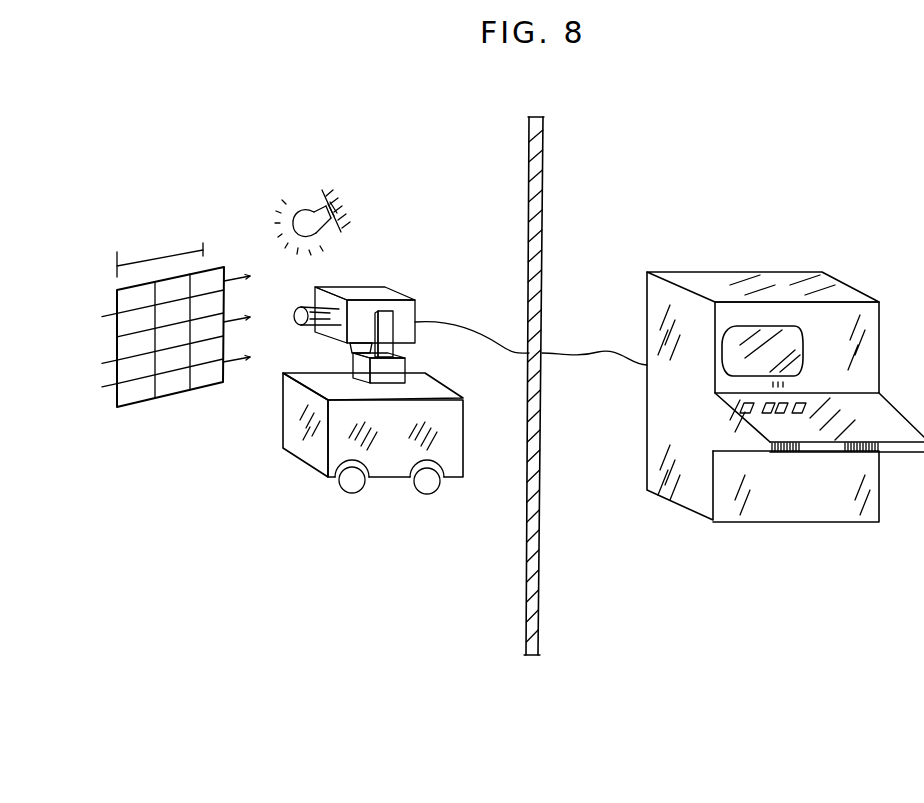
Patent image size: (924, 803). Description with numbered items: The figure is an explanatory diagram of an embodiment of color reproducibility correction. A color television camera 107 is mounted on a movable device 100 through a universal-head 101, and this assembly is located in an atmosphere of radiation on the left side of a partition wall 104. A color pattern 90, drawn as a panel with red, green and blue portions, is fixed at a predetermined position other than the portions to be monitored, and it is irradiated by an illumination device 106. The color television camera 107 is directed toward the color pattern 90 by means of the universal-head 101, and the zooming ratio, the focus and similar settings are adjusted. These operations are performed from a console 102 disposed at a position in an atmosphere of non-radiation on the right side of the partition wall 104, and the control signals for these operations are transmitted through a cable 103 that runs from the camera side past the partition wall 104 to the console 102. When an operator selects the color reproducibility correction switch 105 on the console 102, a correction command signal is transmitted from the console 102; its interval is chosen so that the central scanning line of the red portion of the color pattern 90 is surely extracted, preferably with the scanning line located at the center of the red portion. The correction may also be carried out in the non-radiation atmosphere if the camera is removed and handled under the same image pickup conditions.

The color pattern 90 is at (117, 338).
The movable device 100 is at (392, 467).
The universal-head 101 is at (405, 368).
The console 102 is at (780, 278).
The cable 103 is at (598, 352).
The partition wall 104 is at (543, 138).
The color reproducibility correction switch 105 is at (797, 413).
The illumination device 106 is at (317, 230).
The color television camera 107 is at (390, 293).